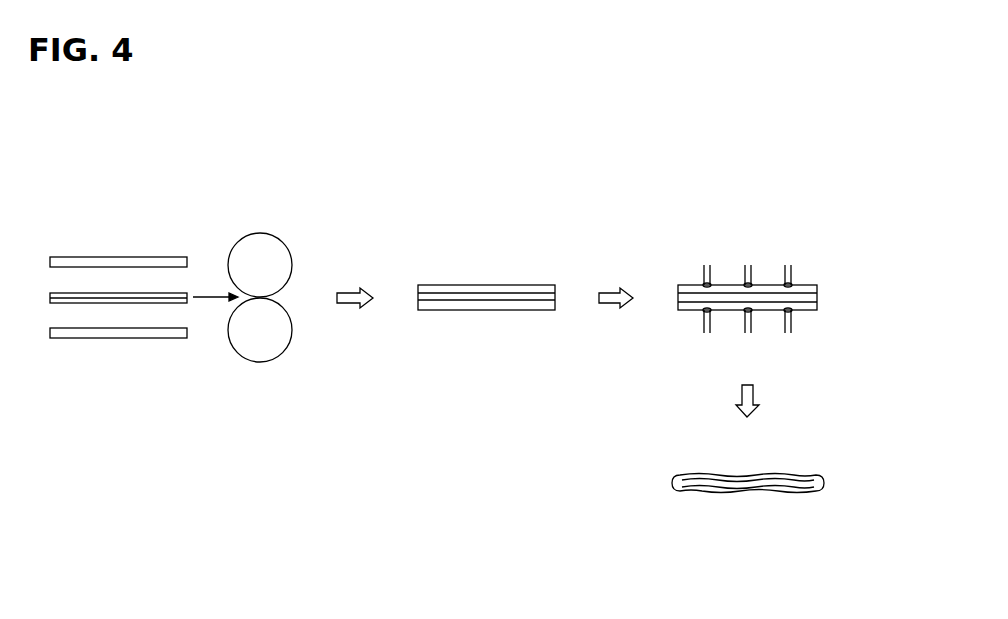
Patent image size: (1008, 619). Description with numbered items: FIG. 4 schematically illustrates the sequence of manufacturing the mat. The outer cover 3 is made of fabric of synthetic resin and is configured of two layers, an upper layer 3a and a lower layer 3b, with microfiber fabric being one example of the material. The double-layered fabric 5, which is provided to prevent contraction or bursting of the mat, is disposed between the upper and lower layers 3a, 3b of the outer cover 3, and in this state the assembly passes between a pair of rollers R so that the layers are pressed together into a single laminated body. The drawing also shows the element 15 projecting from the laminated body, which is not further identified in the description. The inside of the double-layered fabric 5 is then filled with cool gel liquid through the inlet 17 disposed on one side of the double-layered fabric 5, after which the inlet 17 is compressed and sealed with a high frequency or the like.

The outer cover 3 is at (461, 356).
The upper layer of the outer cover 3a is at (84, 257).
The lower layer of the outer cover 3b is at (152, 328).
The double-layered fabric 5 is at (97, 303).
The rollers R is at (278, 241).
The pin / terminal 15 is at (705, 265).
The inlet 17 is at (826, 477).